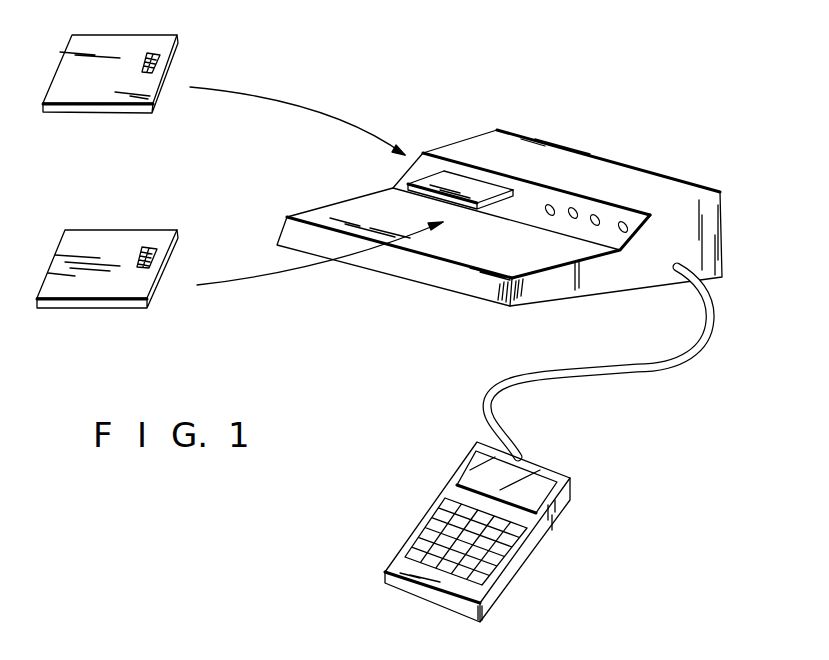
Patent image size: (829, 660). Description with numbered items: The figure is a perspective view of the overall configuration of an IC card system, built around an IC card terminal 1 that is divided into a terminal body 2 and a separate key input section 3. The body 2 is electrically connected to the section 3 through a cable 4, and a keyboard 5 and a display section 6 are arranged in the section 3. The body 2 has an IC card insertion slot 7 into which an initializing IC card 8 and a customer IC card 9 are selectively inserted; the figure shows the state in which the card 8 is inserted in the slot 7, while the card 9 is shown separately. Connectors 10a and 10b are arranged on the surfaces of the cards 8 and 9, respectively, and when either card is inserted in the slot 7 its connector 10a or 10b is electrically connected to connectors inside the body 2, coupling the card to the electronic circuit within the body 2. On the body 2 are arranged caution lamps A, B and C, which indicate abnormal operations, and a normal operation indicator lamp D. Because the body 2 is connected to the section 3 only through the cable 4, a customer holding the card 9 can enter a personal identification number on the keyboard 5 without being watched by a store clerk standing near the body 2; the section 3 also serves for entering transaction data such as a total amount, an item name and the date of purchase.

The IC card terminal 1 is at (545, 140).
The terminal body 2 is at (717, 222).
The key input section 3 is at (570, 492).
The cable 4 is at (638, 370).
The keyboard 5 is at (488, 567).
The display section 6 is at (537, 482).
The IC card insertion slot 7 is at (440, 172).
The initializing IC card 8 is at (123, 38).
The customer IC card 9 is at (113, 233).
The connector 10a is at (158, 58).
The connector 10b is at (155, 255).
The caution lamp A is at (555, 207).
The caution lamp B is at (577, 212).
The caution lamp C is at (598, 218).
The normal operation indicator lamp D is at (627, 225).